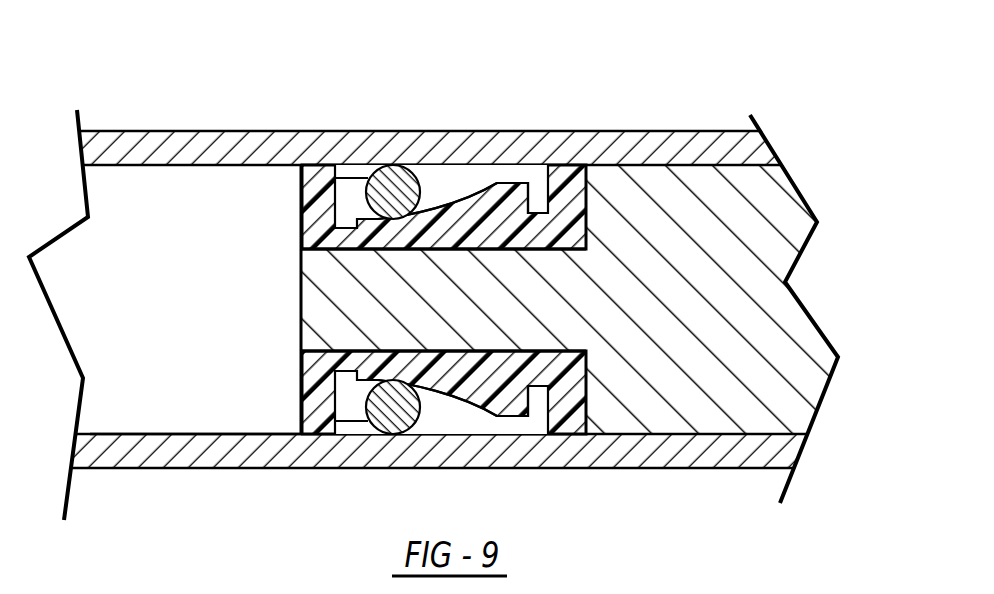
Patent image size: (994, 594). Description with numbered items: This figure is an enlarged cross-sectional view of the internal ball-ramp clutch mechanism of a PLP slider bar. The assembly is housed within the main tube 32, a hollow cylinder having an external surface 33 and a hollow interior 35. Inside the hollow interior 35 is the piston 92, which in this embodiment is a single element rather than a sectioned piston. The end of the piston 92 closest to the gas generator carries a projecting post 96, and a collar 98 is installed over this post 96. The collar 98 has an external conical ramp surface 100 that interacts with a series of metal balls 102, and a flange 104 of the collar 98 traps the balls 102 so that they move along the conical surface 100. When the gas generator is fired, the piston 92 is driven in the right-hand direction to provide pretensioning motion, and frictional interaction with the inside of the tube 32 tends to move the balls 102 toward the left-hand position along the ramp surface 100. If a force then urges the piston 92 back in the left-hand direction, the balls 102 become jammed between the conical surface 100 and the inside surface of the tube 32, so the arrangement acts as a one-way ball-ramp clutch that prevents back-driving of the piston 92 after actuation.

The main tube 32 is at (167, 131).
The external surface 33 is at (268, 467).
The hollow interior 35 is at (247, 433).
The piston 92 is at (683, 392).
The projecting post 96 is at (497, 305).
The collar 98 is at (510, 183).
The conical ramp surface 100 is at (456, 195).
The metal balls 102 is at (397, 188).
The flange 104 is at (300, 200).